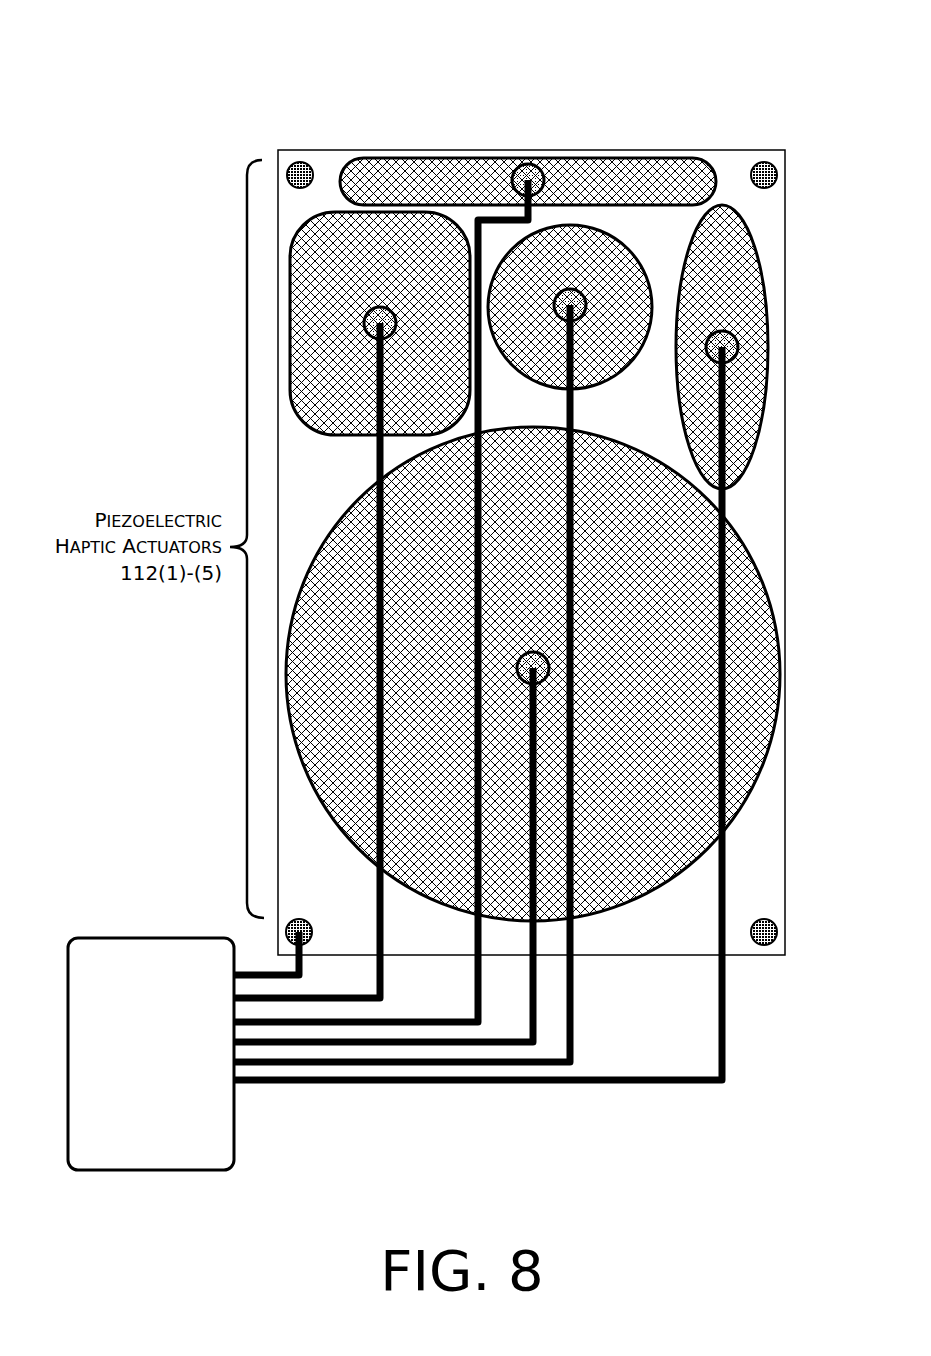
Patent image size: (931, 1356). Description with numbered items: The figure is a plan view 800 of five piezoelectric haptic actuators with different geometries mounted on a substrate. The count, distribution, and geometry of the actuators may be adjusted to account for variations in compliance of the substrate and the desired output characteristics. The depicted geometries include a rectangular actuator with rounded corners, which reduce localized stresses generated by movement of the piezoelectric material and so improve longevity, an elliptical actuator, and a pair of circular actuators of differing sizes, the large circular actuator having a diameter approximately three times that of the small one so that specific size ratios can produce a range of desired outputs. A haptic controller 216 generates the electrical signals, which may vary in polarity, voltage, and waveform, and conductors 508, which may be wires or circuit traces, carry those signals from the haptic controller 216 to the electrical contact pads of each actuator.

The plan view 800 is at (770, 62).
The haptic controller 216 is at (151, 1054).
The conductors 508 is at (478, 662).